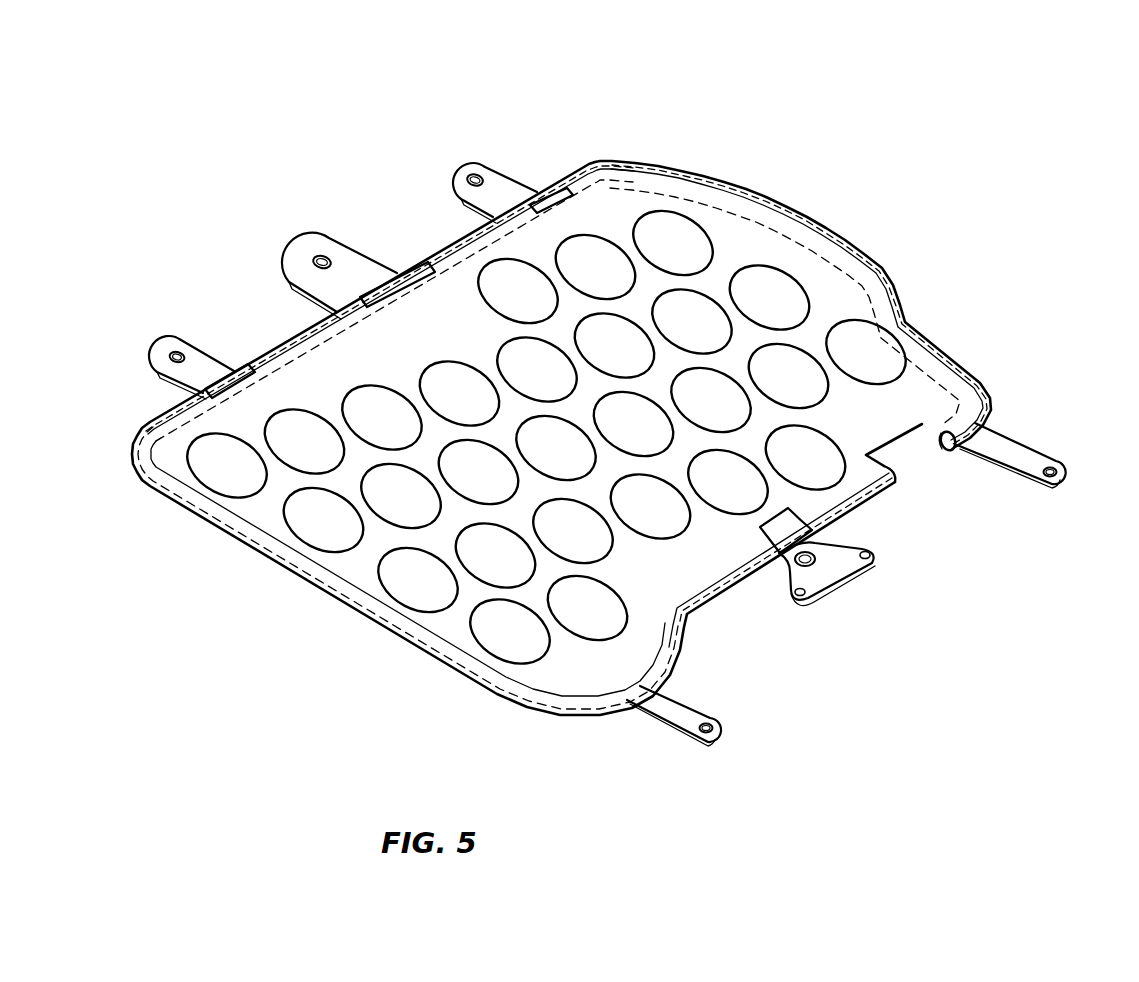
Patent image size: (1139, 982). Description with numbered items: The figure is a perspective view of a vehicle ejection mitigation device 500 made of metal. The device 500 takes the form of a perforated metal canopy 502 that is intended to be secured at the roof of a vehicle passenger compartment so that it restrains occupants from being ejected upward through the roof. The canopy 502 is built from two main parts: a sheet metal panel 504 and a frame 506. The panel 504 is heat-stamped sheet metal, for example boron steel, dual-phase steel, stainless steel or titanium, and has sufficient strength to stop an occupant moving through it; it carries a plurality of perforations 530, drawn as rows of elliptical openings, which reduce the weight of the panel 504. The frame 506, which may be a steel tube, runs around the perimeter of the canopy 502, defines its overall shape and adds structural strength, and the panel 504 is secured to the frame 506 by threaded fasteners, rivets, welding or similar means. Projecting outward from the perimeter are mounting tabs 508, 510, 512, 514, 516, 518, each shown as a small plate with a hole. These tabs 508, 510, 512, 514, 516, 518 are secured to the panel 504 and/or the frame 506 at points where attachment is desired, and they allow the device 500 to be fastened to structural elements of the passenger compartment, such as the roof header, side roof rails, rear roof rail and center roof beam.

The vehicle ejection mitigation device 500 is at (915, 96).
The canopy 502 is at (670, 121).
The metal panel 504 is at (683, 548).
The frame 506 is at (946, 455).
The mounting tab 508 is at (467, 176).
The mounting tab 510 is at (300, 253).
The mounting tab 512 is at (168, 348).
The mounting tab 514 is at (676, 715).
The mounting tab 516 is at (820, 567).
The mounting tab 518 is at (1040, 460).
The perforations 530 is at (712, 243).